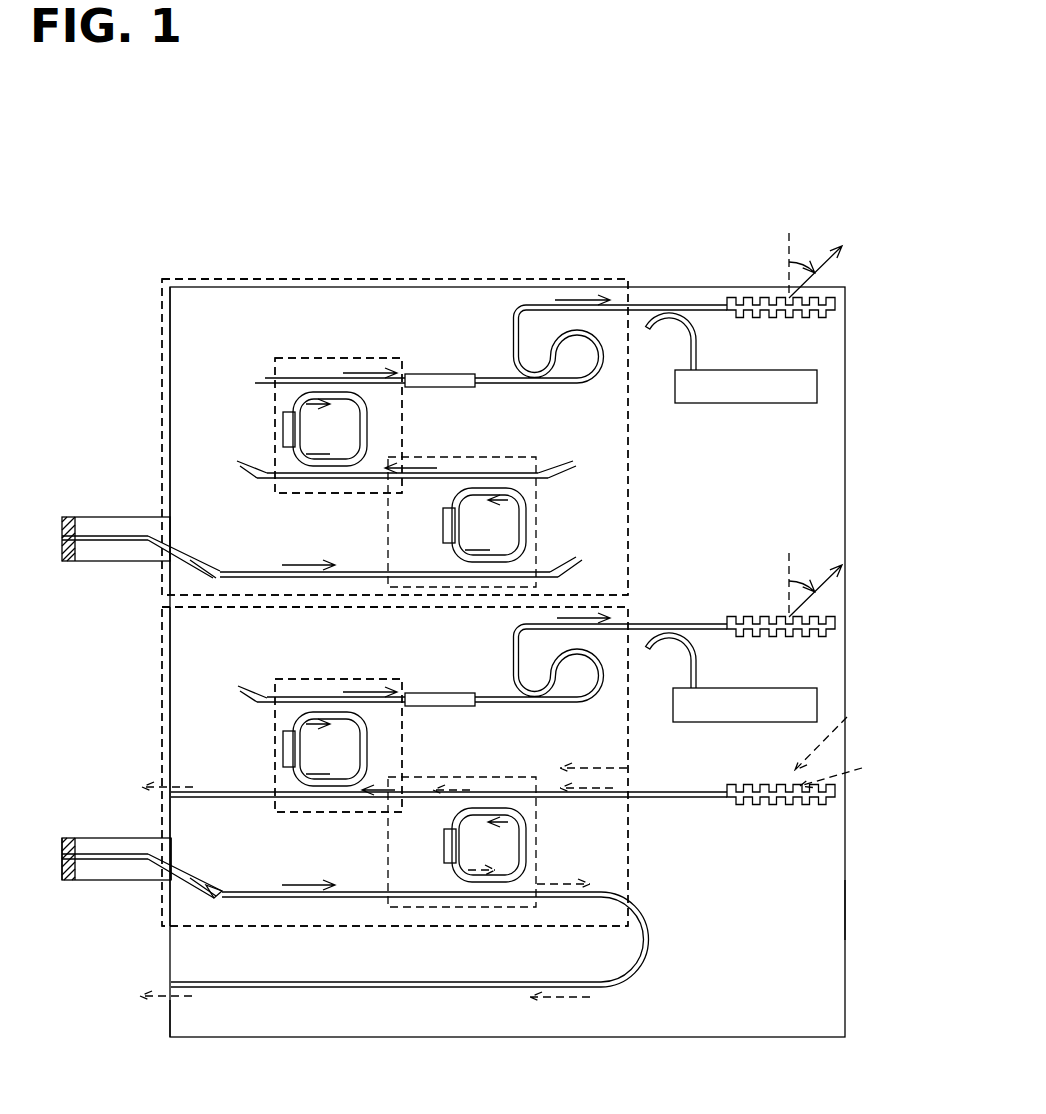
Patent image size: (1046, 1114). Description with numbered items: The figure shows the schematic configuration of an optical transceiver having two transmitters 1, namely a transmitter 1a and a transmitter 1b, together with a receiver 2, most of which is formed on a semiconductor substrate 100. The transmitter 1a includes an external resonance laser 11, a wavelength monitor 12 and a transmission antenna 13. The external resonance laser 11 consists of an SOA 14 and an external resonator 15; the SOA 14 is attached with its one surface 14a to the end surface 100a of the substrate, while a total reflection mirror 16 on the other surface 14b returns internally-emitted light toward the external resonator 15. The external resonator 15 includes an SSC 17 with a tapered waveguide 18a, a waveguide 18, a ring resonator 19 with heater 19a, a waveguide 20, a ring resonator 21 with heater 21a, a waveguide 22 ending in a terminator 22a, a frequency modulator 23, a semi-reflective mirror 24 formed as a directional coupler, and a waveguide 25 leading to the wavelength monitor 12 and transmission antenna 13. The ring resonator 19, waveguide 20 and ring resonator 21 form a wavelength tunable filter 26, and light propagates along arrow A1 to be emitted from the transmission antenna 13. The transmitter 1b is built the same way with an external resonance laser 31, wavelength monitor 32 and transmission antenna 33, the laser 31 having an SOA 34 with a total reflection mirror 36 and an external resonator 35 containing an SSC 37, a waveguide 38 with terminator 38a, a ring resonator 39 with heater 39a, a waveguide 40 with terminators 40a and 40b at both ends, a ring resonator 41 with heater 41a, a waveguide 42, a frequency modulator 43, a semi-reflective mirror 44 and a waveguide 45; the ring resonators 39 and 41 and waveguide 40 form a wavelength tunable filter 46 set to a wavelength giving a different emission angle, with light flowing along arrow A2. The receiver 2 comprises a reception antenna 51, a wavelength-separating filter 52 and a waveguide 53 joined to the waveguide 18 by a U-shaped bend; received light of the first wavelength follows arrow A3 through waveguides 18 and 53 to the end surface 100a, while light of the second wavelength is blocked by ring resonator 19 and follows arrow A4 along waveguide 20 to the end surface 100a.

The transmitter 1 is at (139, 343).
The transmitter 1a is at (344, 766).
The transmitter 1b is at (345, 437).
The receiver 2 is at (868, 914).
The external resonance laser 11 is at (154, 712).
The wavelength monitor 12 is at (755, 688).
The transmission antenna 13 is at (752, 616).
The SOA 14 is at (96, 838).
The one surface 14a is at (172, 857).
The other surface 14b is at (62, 847).
The external resonator 15 is at (160, 616).
The total reflection mirror 16 is at (63, 866).
The SSC 17 is at (196, 872).
The waveguide 18 is at (372, 891).
The tapered waveguide 18a is at (210, 900).
The ring resonator 19 is at (528, 845).
The heater 19a is at (441, 846).
The waveguide 20 is at (330, 812).
The ring resonator 21 is at (370, 745).
The heater 21a is at (283, 748).
The waveguide 22 is at (322, 696).
The terminator 22a is at (250, 685).
The frequency modulator 23 is at (440, 693).
The semi-reflective mirror 24 is at (549, 703).
The waveguide 25 is at (656, 624).
The wavelength tunable filter 26 is at (290, 678).
The external resonance laser 31 is at (154, 400).
The wavelength monitor 32 is at (755, 370).
The transmission antenna 33 is at (748, 297).
The SOA 34 is at (118, 515).
The external resonator 35 is at (160, 290).
The total reflection mirror 36 is at (62, 545).
The SSC 37 is at (213, 556).
The waveguide 38 is at (375, 572).
The terminator 38a is at (562, 568).
The ring resonator 39 is at (530, 520).
The heater 39a is at (440, 522).
The waveguide 40 is at (315, 493).
The terminator 40a is at (248, 470).
The terminator 40b is at (555, 466).
The ring resonator 41 is at (370, 425).
The heater 41a is at (283, 428).
The waveguide 42 is at (303, 378).
The frequency modulator 43 is at (437, 374).
The semi-reflective mirror 44 is at (575, 386).
The waveguide 45 is at (648, 305).
The wavelength tunable filter 46 is at (283, 358).
The reception antenna 51 is at (800, 806).
The wavelength-separating filter 52 is at (449, 829).
The waveguide 53 is at (432, 990).
The semiconductor substrate 100 is at (226, 1012).
The end surface 100a is at (170, 1028).
The arrow A1 is at (580, 616).
The arrow A2 is at (370, 372).
The arrow A3 is at (600, 803).
The arrow A4 is at (472, 780).